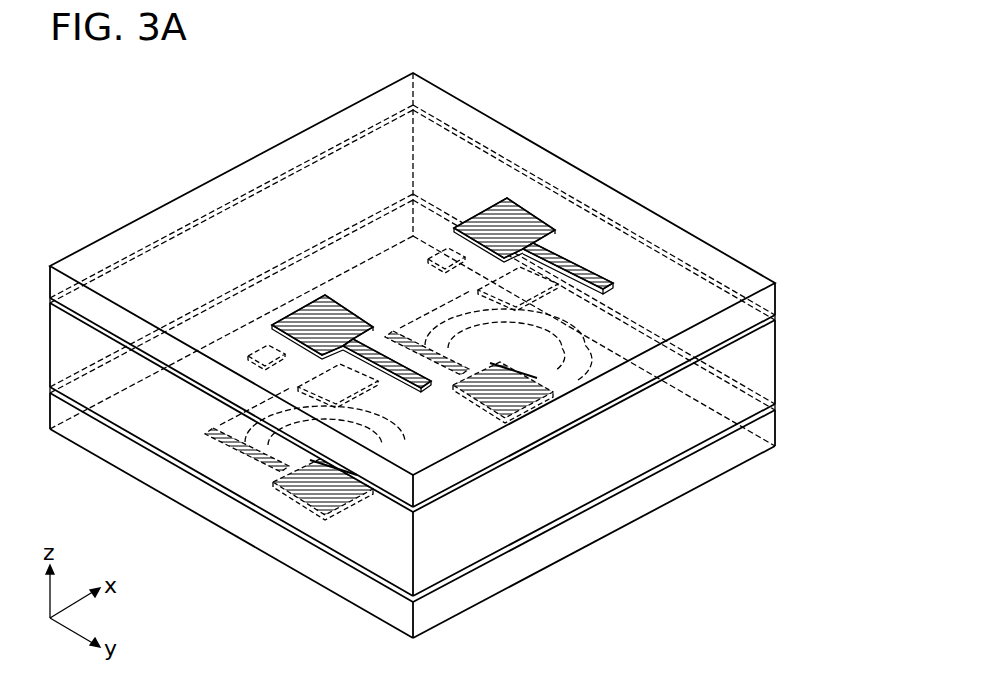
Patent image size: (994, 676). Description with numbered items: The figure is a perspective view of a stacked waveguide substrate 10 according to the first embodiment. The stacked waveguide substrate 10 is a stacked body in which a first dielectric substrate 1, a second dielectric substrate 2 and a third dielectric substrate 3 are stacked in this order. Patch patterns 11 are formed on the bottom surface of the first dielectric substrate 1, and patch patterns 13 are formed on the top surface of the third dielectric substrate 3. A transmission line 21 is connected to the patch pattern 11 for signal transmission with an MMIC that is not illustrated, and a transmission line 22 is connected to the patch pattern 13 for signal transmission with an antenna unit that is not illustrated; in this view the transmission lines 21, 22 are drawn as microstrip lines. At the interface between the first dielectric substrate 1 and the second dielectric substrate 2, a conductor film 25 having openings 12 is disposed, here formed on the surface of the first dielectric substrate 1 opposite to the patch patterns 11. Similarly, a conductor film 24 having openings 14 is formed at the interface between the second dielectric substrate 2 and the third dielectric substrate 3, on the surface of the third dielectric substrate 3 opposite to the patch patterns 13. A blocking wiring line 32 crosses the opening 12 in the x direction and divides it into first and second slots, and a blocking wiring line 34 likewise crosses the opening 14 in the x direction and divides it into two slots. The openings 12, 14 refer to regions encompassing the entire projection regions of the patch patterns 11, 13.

The first dielectric substrate 1 is at (772, 430).
The second dielectric substrate 2 is at (772, 364).
The third dielectric substrate 3 is at (772, 300).
The stacked waveguide substrate 10 is at (147, 105).
The patch pattern 11 is at (305, 500).
The opening 12 is at (285, 475).
The patch pattern 13 is at (296, 318).
The opening 14 is at (265, 350).
The transmission line 21 is at (238, 432).
The transmission line 22 is at (410, 372).
The conductor film 24 is at (775, 320).
The conductor film 25 is at (775, 409).
The blocking wiring line 32 is at (610, 332).
The blocking wiring line 34 is at (262, 368).